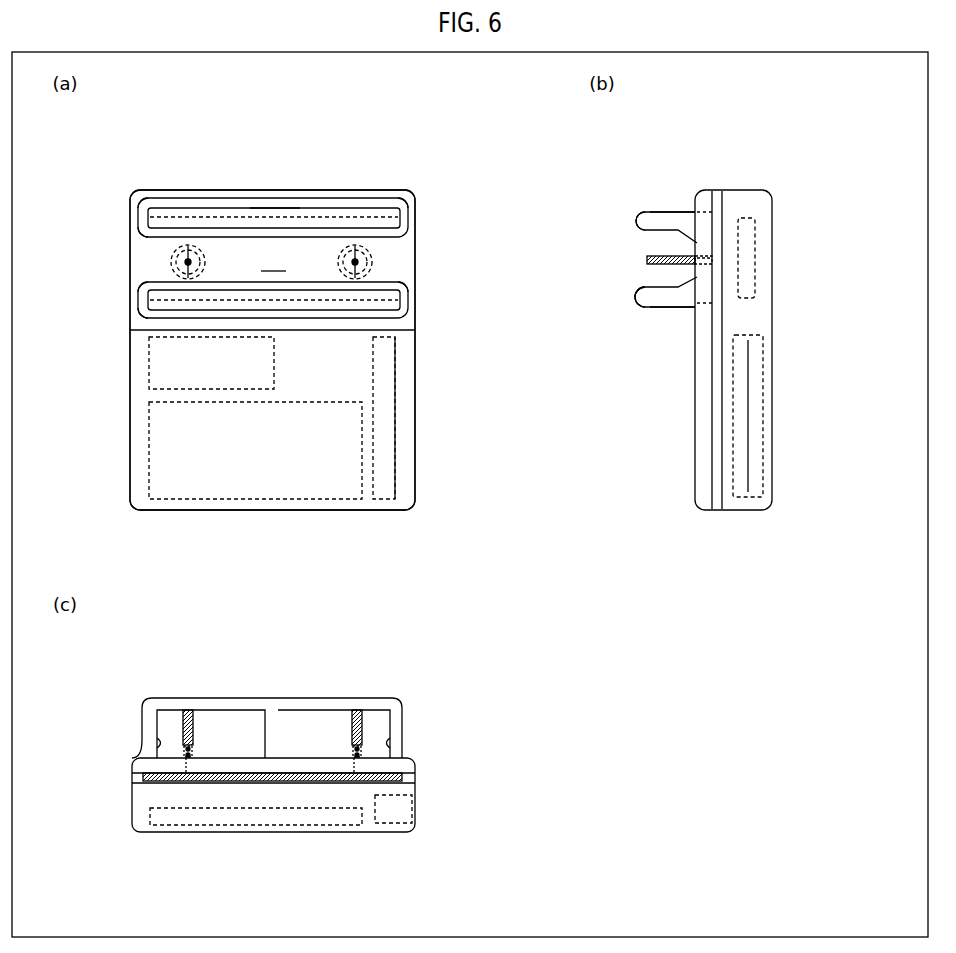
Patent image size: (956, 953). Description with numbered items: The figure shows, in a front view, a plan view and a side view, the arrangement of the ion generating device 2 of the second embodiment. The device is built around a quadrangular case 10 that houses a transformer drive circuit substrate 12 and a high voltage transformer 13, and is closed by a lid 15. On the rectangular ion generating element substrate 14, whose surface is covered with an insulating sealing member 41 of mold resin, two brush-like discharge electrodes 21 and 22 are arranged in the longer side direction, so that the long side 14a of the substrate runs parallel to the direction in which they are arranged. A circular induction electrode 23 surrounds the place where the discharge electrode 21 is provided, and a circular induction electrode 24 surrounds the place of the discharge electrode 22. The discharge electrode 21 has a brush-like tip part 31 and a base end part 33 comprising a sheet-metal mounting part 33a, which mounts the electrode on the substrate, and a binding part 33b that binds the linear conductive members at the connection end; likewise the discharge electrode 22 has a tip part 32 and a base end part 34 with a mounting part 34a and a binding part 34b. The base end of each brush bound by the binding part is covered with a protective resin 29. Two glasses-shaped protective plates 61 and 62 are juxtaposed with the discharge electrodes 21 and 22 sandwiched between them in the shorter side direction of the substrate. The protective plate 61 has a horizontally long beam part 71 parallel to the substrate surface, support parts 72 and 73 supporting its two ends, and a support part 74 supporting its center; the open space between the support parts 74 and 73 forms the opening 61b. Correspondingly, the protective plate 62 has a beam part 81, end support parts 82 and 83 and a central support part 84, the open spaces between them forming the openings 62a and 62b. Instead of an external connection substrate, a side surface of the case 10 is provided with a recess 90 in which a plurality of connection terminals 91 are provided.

The ion generating device 2 is at (489, 146).
The case 10 is at (365, 510).
The transformer drive circuit substrate 12 is at (156, 432).
The high voltage transformer 13 is at (156, 367).
The ion generating element substrate 14 is at (243, 226).
The long side 14a is at (275, 216).
The lid 15 is at (412, 317).
The discharge electrode 21 is at (256, 106).
The discharge electrode 22 is at (424, 106).
The induction electrode 23 is at (192, 236).
The induction electrode 24 is at (360, 236).
The protective resin 29 is at (700, 262).
The tip part 31 is at (189, 258).
The tip part 32 is at (356, 258).
The base end part 33 is at (190, 260).
The mounting part 33a is at (193, 758).
The binding part 33b is at (190, 752).
The base end part 34 is at (357, 260).
The mounting part 34a is at (359, 758).
The binding part 34b is at (356, 752).
The insulating sealing member 41 is at (273, 261).
The protective plate 61 is at (425, 226).
The opening 61b is at (650, 222).
The protective plate 62 is at (425, 298).
The opening 62a is at (140, 752).
The opening 62b is at (650, 303).
The beam part 71 is at (136, 196).
The support part 72 is at (141, 211).
The support part 73 is at (411, 205).
The support part 74 is at (282, 209).
The beam part 81 is at (137, 281).
The support part 82 is at (141, 295).
The support part 83 is at (411, 284).
The support part 84 is at (284, 306).
The recess 90 is at (405, 493).
The connection terminals 91 is at (396, 432).